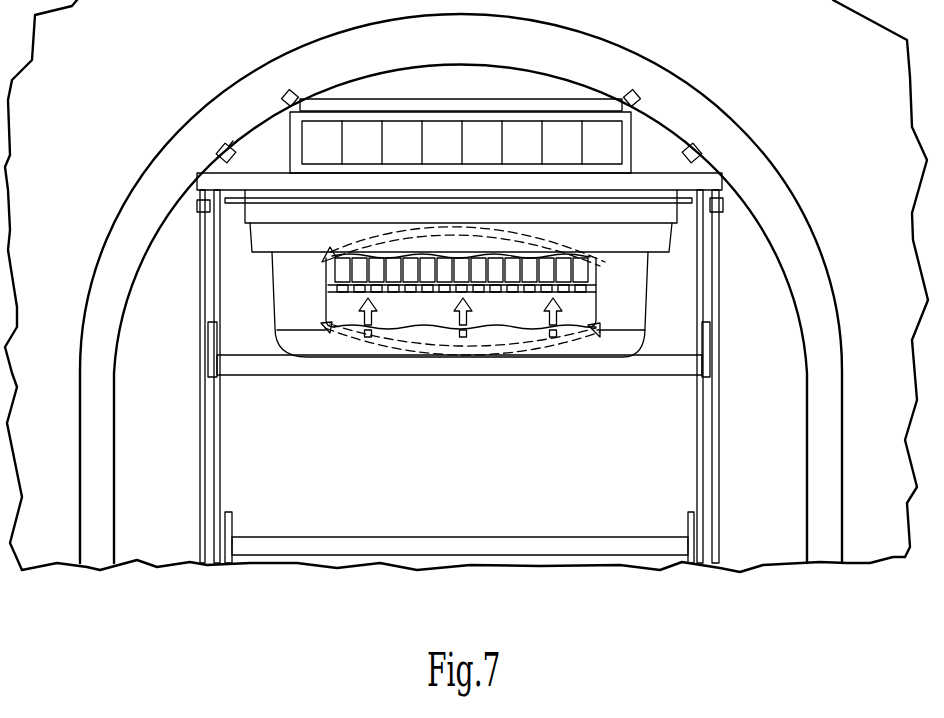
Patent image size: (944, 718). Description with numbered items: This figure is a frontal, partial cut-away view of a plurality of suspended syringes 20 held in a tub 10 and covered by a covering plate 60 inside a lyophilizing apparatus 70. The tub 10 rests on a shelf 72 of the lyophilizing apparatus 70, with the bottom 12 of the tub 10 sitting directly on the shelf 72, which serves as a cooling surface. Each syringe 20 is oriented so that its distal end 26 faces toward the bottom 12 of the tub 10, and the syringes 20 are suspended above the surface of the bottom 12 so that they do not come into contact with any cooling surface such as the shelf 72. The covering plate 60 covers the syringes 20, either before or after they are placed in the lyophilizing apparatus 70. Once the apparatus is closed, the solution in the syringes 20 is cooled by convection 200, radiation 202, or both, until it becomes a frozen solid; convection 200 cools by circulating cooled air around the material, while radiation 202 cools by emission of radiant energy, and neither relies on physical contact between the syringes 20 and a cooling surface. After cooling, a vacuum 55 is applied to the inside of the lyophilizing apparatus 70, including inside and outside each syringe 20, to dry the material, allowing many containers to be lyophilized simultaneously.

The lyophilizing apparatus 70 is at (176, 52).
The vacuum 55 is at (600, 121).
The covering plate 60 is at (640, 200).
The shelf 72 is at (258, 360).
The bottom 12 is at (355, 360).
The tub 10 is at (250, 306).
The distal end 26 is at (532, 292).
The syringe 20 is at (615, 264).
The convection 200 is at (575, 252).
The radiation 202 is at (373, 323).